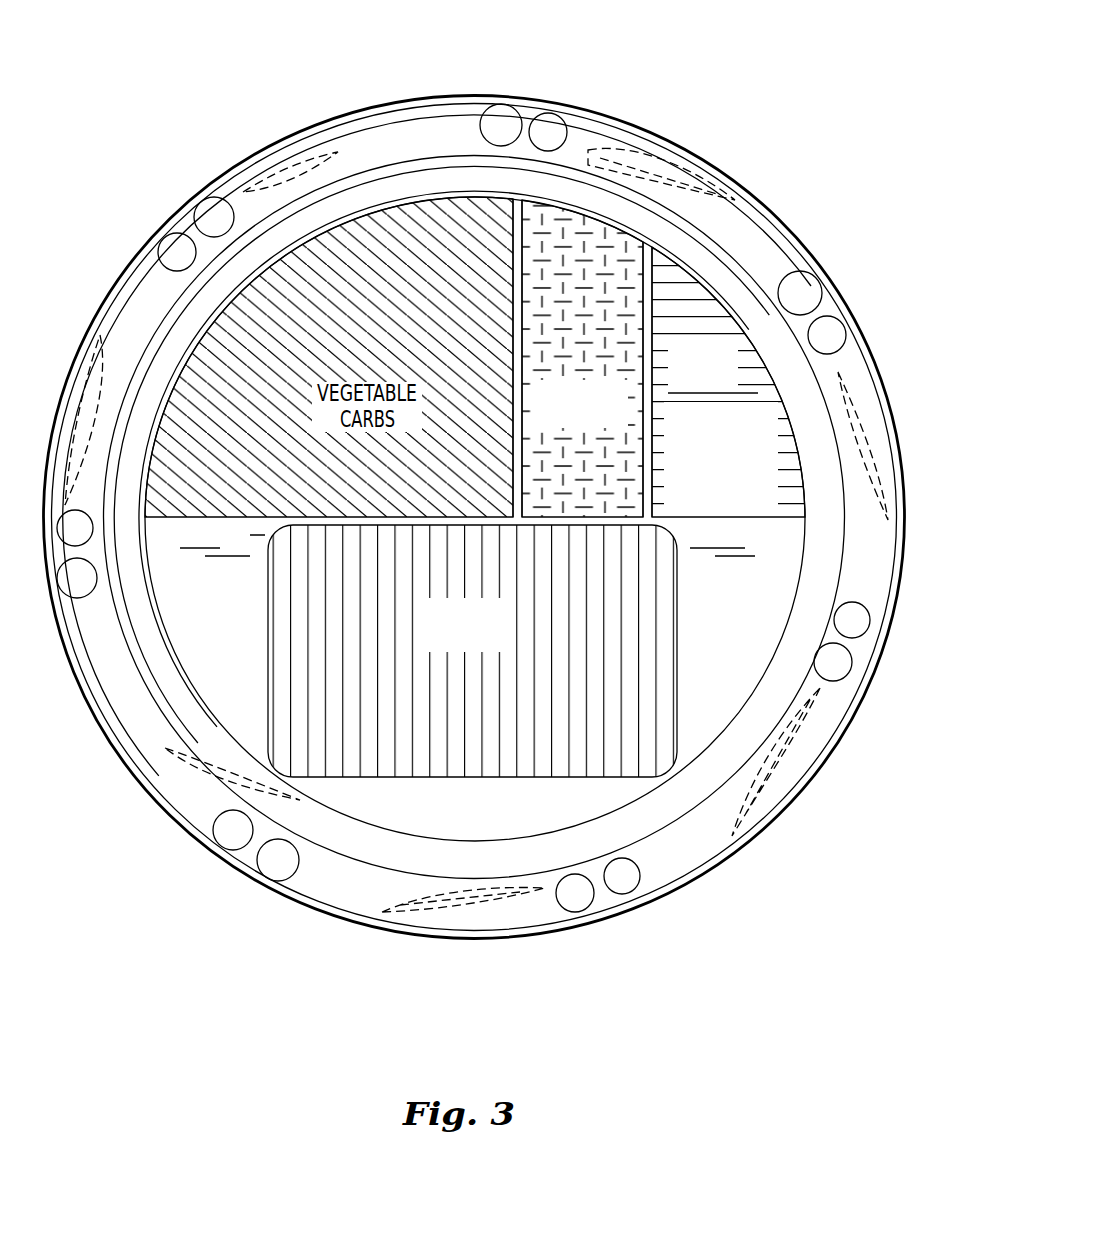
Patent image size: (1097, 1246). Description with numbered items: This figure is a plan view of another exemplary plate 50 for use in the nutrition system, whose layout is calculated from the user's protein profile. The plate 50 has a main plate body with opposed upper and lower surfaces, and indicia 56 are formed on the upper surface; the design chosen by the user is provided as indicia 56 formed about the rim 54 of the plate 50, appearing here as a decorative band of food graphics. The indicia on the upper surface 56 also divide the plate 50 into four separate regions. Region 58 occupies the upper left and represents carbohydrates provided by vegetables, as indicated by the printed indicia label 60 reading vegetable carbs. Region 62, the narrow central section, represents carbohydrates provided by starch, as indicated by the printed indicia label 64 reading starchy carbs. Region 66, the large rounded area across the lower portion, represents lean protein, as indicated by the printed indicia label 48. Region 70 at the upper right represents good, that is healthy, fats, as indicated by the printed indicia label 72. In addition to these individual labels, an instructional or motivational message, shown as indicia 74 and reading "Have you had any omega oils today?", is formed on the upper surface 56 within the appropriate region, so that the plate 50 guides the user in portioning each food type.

The printed indicia label 48 is at (456, 666).
The plate 50 is at (740, 77).
The rim 54 is at (809, 787).
The upper surface indicia 56 is at (518, 243).
The vegetable carbohydrate region 58 is at (300, 248).
The printed indicia label 60 is at (303, 375).
The starch carbohydrate region 62 is at (600, 218).
The printed indicia label 64 is at (597, 372).
The lean protein region 66 is at (330, 787).
The good fats region 70 is at (712, 308).
The printed indicia label 72 is at (737, 363).
The instructional message indicia 74 is at (744, 512).